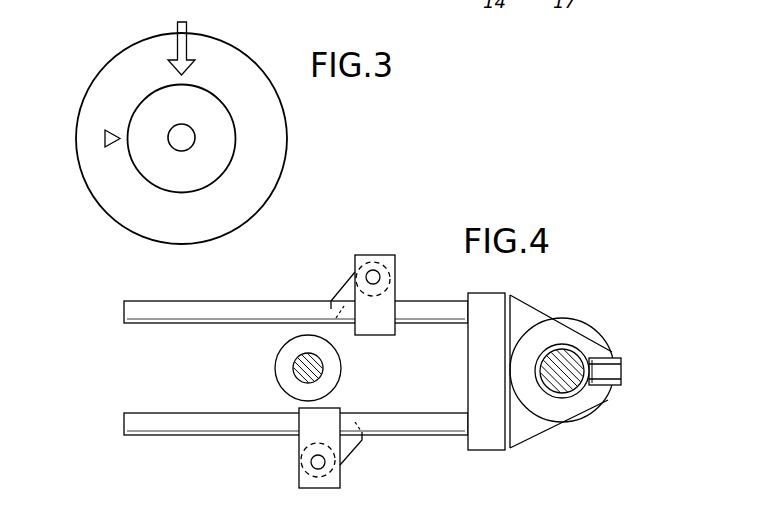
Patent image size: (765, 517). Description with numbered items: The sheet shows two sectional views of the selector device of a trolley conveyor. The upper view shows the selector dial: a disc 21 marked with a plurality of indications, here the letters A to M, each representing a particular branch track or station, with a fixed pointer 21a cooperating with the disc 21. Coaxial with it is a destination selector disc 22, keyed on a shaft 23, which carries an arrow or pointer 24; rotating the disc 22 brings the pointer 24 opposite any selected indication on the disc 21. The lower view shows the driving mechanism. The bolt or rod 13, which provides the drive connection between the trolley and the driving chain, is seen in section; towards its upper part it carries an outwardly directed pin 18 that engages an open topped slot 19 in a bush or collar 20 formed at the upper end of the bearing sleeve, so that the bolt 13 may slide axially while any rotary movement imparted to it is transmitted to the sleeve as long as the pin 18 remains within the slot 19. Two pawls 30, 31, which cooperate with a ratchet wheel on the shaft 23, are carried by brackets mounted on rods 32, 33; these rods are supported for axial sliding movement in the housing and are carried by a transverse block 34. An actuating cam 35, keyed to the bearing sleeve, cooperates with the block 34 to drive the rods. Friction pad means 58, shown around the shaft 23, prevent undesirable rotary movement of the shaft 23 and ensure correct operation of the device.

In FIG. 4, the bolt or rod 13 is at (572, 393).
In FIG. 4, the pin 18 is at (605, 376).
In FIG. 4, the open topped slot 19 is at (607, 357).
In FIG. 4, the bush or collar 20 is at (578, 327).
In FIG. 3, the disc 21 is at (140, 117).
In FIG. 3, the fixed pointer 21a is at (237, 30).
In FIG. 3, the destination selector disc 22 is at (98, 192).
In FIG. 3, the shaft 23 is at (171, 143).
In FIG. 4, the shaft 23 is at (324, 368).
In FIG. 3, the arrow or pointer 24 is at (105, 138).
In FIG. 4, the pawl 30 is at (346, 290).
In FIG. 4, the pawl 31 is at (298, 445).
In FIG. 4, the rod 32 is at (424, 312).
In FIG. 4, the rod 33 is at (424, 424).
In FIG. 4, the transverse block 34 is at (485, 442).
In FIG. 4, the actuating cam 35 is at (547, 412).
In FIG. 4, the friction pad means 58 is at (277, 362).